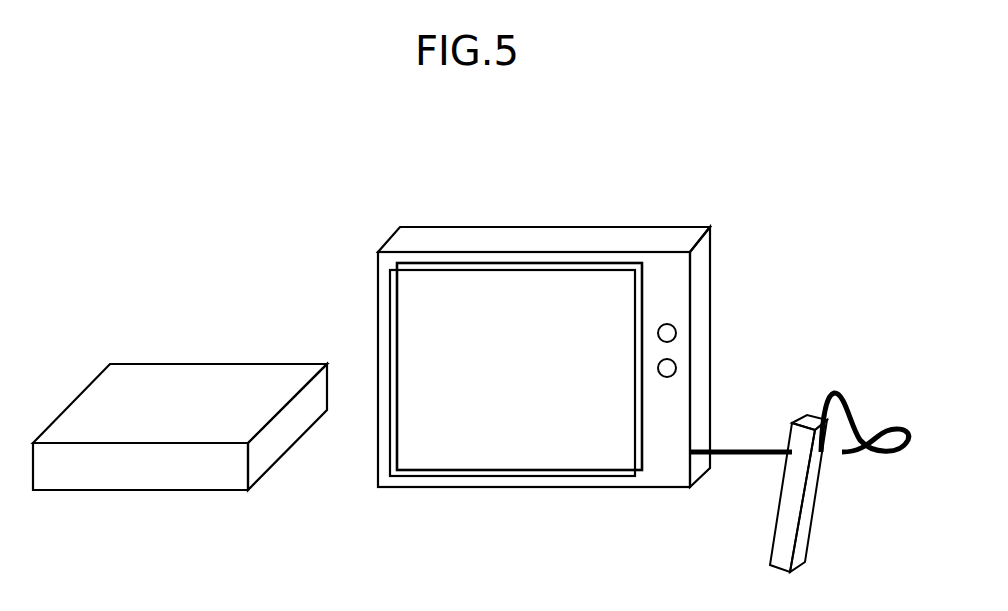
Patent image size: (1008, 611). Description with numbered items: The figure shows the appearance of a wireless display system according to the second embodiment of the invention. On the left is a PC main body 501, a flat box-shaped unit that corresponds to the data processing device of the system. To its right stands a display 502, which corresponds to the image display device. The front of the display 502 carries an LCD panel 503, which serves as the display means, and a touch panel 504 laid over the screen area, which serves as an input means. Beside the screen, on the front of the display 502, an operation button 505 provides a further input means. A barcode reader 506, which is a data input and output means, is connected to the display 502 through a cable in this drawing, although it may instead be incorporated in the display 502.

The PC main body 501 is at (183, 382).
The display 502 is at (508, 238).
The LCD panel 503 is at (610, 262).
The touch panel 504 is at (440, 474).
The operation button 505 is at (665, 352).
The barcode reader 506 is at (773, 532).